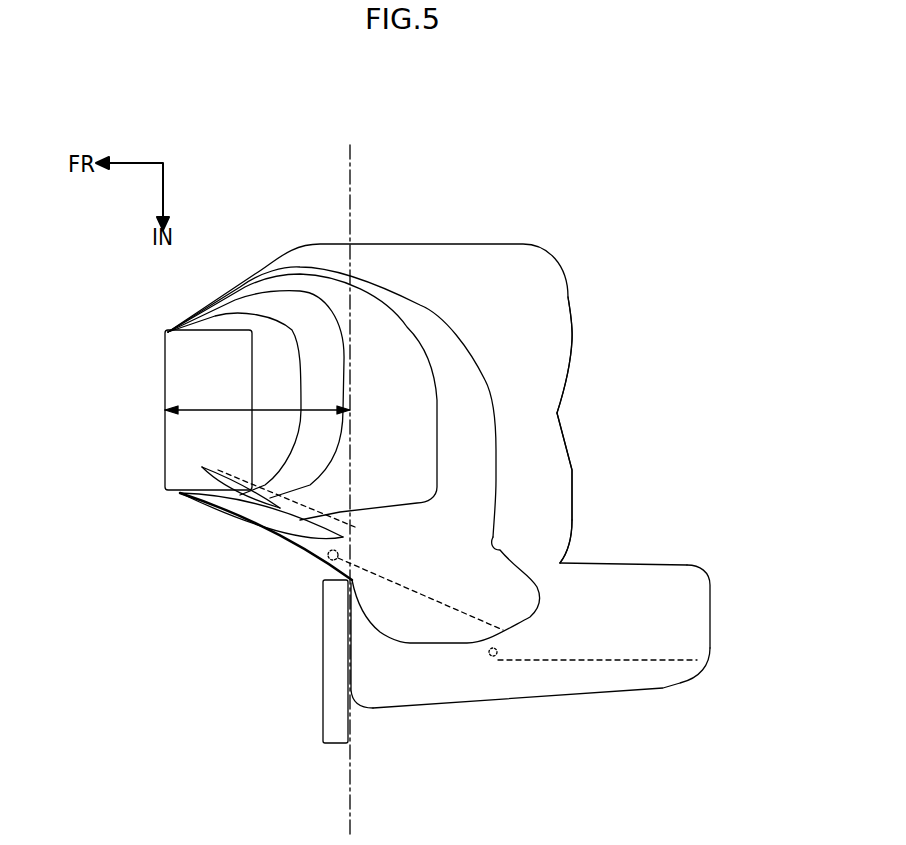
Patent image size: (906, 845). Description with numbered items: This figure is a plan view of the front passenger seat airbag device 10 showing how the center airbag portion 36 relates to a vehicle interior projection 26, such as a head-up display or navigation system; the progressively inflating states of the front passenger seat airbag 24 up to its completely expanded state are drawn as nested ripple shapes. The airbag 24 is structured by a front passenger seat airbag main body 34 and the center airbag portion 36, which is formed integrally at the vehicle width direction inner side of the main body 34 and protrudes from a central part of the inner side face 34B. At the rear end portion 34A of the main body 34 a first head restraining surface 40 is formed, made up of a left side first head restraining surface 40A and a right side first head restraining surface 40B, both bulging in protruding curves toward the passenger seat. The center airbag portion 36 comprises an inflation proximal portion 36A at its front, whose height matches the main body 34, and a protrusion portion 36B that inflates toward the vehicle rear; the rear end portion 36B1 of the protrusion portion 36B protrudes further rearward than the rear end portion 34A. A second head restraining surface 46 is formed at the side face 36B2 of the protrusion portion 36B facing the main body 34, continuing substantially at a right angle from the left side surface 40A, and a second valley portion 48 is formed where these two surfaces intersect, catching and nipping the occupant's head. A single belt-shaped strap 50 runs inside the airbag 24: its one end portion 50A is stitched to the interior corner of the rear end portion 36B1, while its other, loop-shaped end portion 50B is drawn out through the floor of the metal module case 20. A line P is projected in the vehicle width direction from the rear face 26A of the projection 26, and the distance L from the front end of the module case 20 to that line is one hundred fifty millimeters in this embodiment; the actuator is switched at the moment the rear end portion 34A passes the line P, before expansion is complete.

The front passenger seat airbag device 10 is at (138, 391).
The module case 20 is at (165, 430).
The front passenger seat airbag 24 is at (578, 247).
The vehicle interior projection 26 is at (318, 723).
The rear face 26A is at (349, 732).
The front passenger seat airbag main body 34 is at (272, 315).
The rear end portion 34A is at (571, 325).
The side face 34B is at (313, 563).
The center airbag portion 36 is at (200, 473).
The inflation proximal portion 36A is at (415, 698).
The protrusion portion 36B is at (660, 672).
The rear end portion 36B1 is at (711, 608).
The side face 36B2 is at (640, 563).
The first head restraining surface 40 is at (683, 366).
The left side first head restraining surface 40A is at (573, 468).
The right side first head restraining surface 40B is at (573, 353).
The second head restraining surface 46 is at (626, 563).
The second valley portion 48 is at (561, 562).
The strap 50 is at (303, 512).
The one length direction end portion 50A is at (489, 655).
The another length direction end portion 50B is at (328, 562).
The projected line P is at (355, 170).
The distance L is at (217, 408).